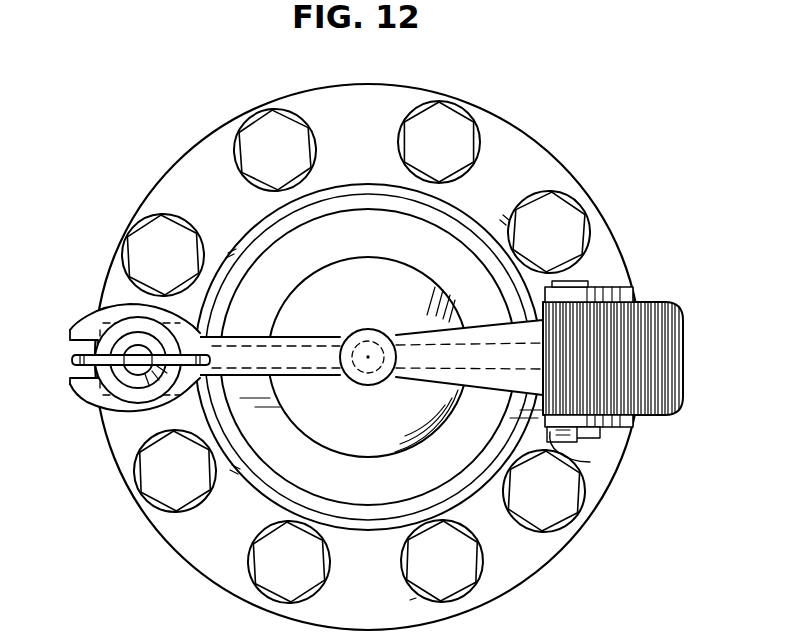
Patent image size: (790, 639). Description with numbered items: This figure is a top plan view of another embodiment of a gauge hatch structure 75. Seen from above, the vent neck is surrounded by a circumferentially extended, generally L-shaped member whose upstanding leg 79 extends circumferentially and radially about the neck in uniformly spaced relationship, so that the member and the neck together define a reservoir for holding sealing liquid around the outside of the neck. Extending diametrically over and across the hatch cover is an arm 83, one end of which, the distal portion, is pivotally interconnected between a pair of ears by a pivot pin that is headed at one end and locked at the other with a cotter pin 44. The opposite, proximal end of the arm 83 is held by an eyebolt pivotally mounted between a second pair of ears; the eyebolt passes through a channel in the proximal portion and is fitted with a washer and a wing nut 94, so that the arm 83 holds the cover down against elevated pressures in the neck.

The gauge hatch structure 75 is at (572, 139).
The bracket 44 is at (628, 449).
The upstanding leg 79 is at (215, 434).
The arm 83 is at (304, 347).
The wing nut 94 is at (72, 360).